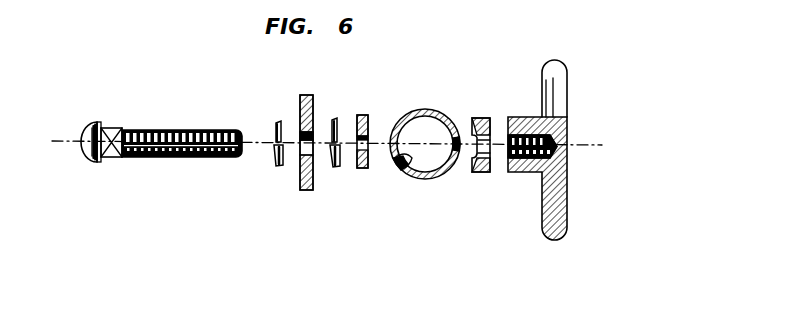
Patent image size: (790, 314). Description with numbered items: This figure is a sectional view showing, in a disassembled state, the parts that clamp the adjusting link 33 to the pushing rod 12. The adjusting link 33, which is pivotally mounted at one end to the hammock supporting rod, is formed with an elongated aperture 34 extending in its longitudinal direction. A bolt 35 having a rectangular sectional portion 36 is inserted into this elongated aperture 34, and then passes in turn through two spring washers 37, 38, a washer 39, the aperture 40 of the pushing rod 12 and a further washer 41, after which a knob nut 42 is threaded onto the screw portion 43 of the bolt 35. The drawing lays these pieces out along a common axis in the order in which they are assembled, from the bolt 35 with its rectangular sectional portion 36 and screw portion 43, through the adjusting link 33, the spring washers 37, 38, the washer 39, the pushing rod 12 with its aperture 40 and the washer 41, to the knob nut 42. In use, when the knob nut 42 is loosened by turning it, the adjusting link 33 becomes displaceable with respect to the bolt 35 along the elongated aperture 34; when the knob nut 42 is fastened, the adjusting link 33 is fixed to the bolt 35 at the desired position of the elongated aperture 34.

The pushing rod 12 is at (433, 140).
The adjusting link 33 is at (306, 190).
The elongated aperture 34 is at (312, 137).
The bolt 35 is at (161, 145).
The rectangular sectional portion 36 is at (109, 126).
The spring washer 37 is at (277, 166).
The spring washer 38 is at (337, 167).
The washer 39 is at (365, 168).
The aperture 40 is at (457, 137).
The washer 41 is at (480, 172).
The knob nut 42 is at (558, 178).
The screw portion 43 is at (186, 129).